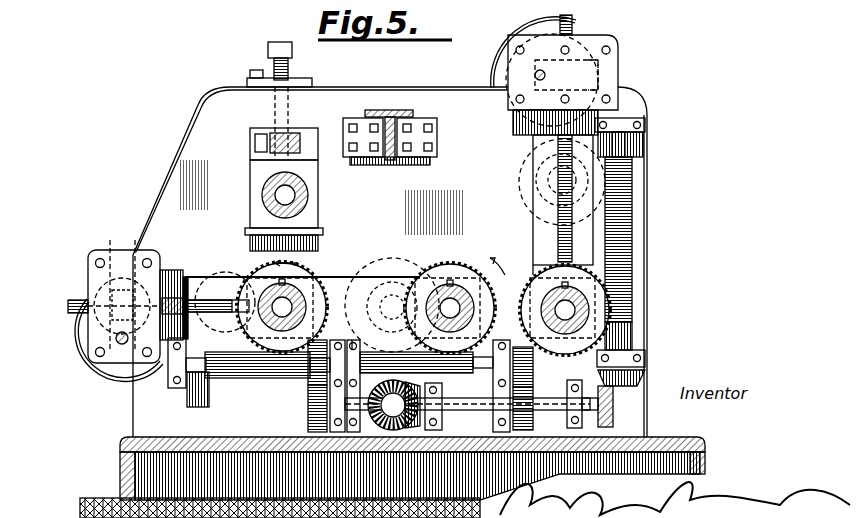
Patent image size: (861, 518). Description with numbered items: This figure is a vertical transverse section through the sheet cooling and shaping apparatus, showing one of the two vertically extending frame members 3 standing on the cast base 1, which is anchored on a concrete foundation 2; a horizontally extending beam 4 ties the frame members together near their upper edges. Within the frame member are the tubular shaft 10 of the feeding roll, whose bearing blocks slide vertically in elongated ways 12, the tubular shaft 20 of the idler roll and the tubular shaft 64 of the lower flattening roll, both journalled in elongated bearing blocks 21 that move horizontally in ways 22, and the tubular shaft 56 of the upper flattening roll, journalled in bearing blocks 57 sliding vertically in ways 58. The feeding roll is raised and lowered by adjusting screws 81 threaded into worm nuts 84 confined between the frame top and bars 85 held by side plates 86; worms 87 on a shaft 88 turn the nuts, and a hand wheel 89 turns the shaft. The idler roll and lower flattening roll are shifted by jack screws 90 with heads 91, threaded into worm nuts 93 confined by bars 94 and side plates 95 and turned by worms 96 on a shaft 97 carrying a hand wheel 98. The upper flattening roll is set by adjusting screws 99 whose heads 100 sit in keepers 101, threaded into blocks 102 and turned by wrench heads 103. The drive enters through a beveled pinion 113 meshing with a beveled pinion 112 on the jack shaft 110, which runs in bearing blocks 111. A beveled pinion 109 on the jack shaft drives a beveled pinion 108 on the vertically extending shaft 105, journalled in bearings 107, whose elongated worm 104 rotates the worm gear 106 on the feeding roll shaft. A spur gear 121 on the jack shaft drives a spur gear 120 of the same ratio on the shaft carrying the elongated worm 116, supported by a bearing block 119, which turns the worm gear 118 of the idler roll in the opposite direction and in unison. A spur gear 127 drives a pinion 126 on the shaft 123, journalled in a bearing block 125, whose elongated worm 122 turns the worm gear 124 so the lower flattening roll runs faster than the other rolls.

The base 1 is at (125, 458).
The concrete foundation 2 is at (97, 510).
The frame member 3 is at (173, 182).
The horizontally extending beam 4 is at (388, 112).
The tubular shaft 10 is at (587, 312).
The ways 12 is at (537, 193).
The tubular shaft 20 is at (460, 283).
The elongated bearing block 21 is at (347, 283).
The ways 22 is at (403, 275).
The tubular shaft 56 is at (262, 185).
The bearing block 57 is at (306, 203).
The ways 58 is at (305, 133).
The tubular shaft 64 is at (290, 295).
The adjusting screw 81 is at (567, 22).
The worm nut 84 is at (625, 63).
The bar 85 is at (623, 50).
The side plate 86 is at (607, 78).
The worm 87 is at (500, 60).
The shaft 88 is at (535, 75).
The hand wheel 89 is at (510, 45).
The jack screw 90 is at (68, 304).
The head 91 is at (222, 275).
The worm nut 93 is at (118, 246).
The bar 94 is at (90, 264).
The side plate 95 is at (92, 281).
The worm 96 is at (94, 333).
The shaft 97 is at (116, 340).
The hand wheel 98 is at (82, 375).
The adjusting screw 99 is at (275, 66).
The head 100 is at (262, 133).
The keeper 101 is at (258, 158).
The block 102 is at (252, 82).
The head 103 is at (268, 50).
The elongated worm 104 is at (632, 212).
The vertically extending shaft 105 is at (645, 110).
The worm gear 106 is at (535, 268).
The bearing 107 is at (648, 125).
The beveled pinion 108 is at (647, 377).
The beveled pinion 109 is at (613, 413).
The jack shaft 110 is at (448, 412).
The bearing block 111 is at (340, 437).
The beveled pinion 112 is at (393, 432).
The beveled pinion 113 is at (378, 437).
The elongated worm 116 is at (450, 375).
The worm gear 118 is at (450, 270).
The bearing block 119 is at (352, 345).
The spur gear 120 is at (530, 378).
The spur gear 121 is at (527, 432).
The elongated worm 122 is at (232, 377).
The shaft 123 is at (170, 384).
The worm gear 124 is at (268, 272).
The bearing block 125 is at (188, 398).
The pinion 126 is at (308, 378).
The spur gear 127 is at (307, 413).